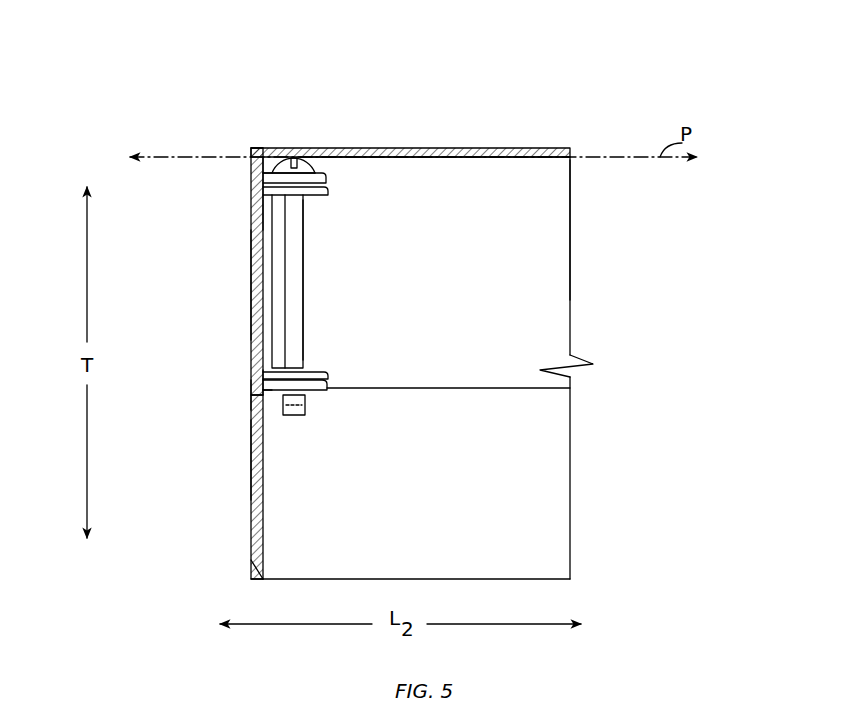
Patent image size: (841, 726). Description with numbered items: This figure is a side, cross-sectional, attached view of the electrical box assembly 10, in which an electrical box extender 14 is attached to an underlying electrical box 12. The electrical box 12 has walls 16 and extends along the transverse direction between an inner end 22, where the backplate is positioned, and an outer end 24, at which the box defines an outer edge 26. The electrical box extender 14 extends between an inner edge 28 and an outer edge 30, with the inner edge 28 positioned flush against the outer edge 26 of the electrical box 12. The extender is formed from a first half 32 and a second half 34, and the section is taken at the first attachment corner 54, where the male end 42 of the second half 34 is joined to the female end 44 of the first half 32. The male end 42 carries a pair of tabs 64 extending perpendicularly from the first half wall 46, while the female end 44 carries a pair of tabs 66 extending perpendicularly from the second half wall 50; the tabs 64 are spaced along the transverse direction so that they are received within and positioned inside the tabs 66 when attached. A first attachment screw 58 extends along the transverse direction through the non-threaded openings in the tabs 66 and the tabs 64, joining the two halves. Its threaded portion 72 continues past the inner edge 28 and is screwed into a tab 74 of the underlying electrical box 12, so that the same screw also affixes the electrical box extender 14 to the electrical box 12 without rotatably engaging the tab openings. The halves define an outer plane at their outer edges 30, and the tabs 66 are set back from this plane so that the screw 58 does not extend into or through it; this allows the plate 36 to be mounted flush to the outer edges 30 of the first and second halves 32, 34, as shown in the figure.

The electrical box assembly 10 is at (176, 103).
The electrical box 12 is at (236, 505).
The electrical box extender 14 is at (214, 241).
The walls 16 is at (251, 453).
The inner end 22 is at (262, 583).
The outer end 24 is at (250, 396).
The outer edge 26 is at (250, 386).
The inner edge 28 is at (268, 392).
The outer edge 30 is at (249, 151).
The first half 32 is at (251, 189).
The second half 34 is at (557, 178).
The plate 36 is at (478, 149).
The male end 42 is at (320, 266).
The female end 44 is at (324, 162).
The first half wall 46 is at (251, 291).
The second half wall 50 is at (543, 216).
The first attachment corner 54 is at (272, 133).
The first attachment screw 58 is at (302, 243).
The tabs 64 is at (330, 190).
The tabs 66 is at (330, 179).
The threaded portion 72 is at (336, 388).
The tab 74 is at (325, 396).